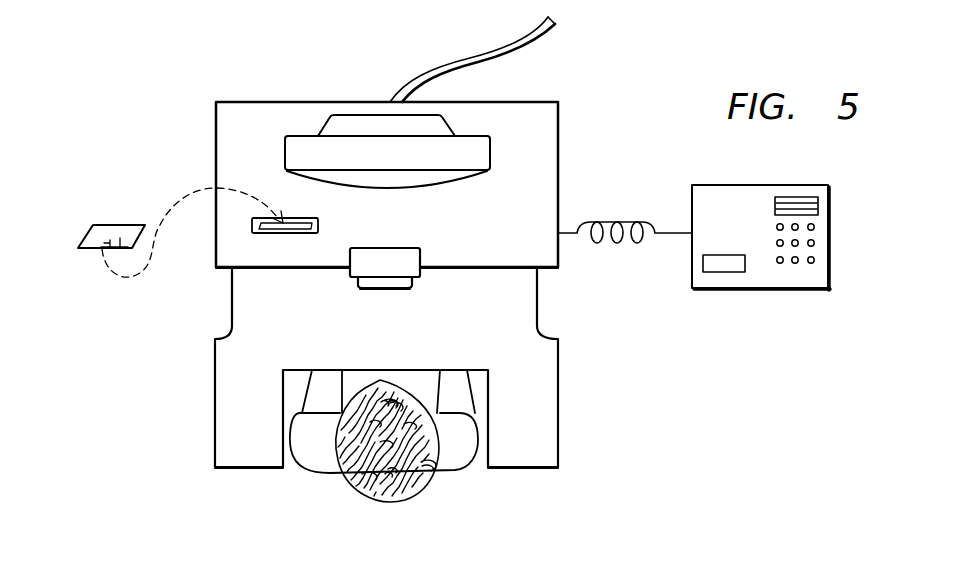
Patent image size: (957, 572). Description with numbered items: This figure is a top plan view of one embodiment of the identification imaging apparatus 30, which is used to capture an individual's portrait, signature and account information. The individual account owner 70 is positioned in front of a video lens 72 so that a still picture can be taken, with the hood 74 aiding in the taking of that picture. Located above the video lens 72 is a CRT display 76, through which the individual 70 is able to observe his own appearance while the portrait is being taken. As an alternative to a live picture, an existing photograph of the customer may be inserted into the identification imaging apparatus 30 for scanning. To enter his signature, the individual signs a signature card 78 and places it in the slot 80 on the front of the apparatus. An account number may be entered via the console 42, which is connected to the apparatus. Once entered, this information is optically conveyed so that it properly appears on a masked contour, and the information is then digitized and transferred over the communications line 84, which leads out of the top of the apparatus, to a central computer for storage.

The identification imaging apparatus 30 is at (233, 102).
The console 42 is at (700, 185).
The individual account owner 70 is at (437, 487).
The video lens 72 is at (420, 275).
The hood 74 is at (558, 370).
The CRT display 76 is at (490, 155).
The signature card 78 is at (88, 226).
The slot 80 is at (252, 226).
The communications line 84 is at (457, 59).